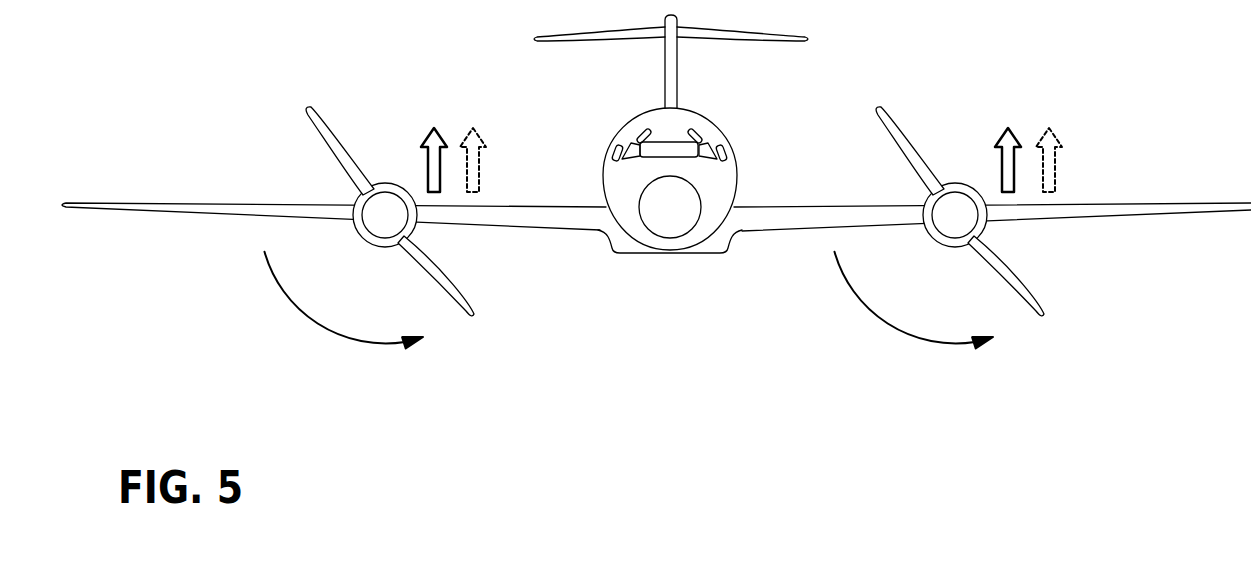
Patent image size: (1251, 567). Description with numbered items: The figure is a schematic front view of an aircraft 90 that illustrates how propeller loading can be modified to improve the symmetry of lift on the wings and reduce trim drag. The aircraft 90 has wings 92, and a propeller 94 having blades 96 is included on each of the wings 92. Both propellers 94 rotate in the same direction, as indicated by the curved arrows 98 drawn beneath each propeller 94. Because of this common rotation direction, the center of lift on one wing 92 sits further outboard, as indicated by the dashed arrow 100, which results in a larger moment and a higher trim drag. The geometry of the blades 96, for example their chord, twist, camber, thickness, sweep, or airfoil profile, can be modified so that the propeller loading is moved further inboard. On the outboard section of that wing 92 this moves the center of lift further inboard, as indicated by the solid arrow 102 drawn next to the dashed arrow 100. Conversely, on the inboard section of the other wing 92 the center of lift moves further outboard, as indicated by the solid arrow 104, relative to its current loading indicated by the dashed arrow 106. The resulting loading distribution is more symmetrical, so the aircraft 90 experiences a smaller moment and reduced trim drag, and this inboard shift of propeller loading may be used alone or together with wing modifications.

The aircraft 90 is at (742, 152).
The wings 92 is at (163, 204).
The propeller 94 is at (360, 227).
The blades 96 is at (473, 320).
The arrows 98 is at (336, 334).
The arrow 100 is at (1053, 131).
The arrow 102 is at (1002, 132).
The arrow 104 is at (427, 132).
The arrow 106 is at (478, 130).